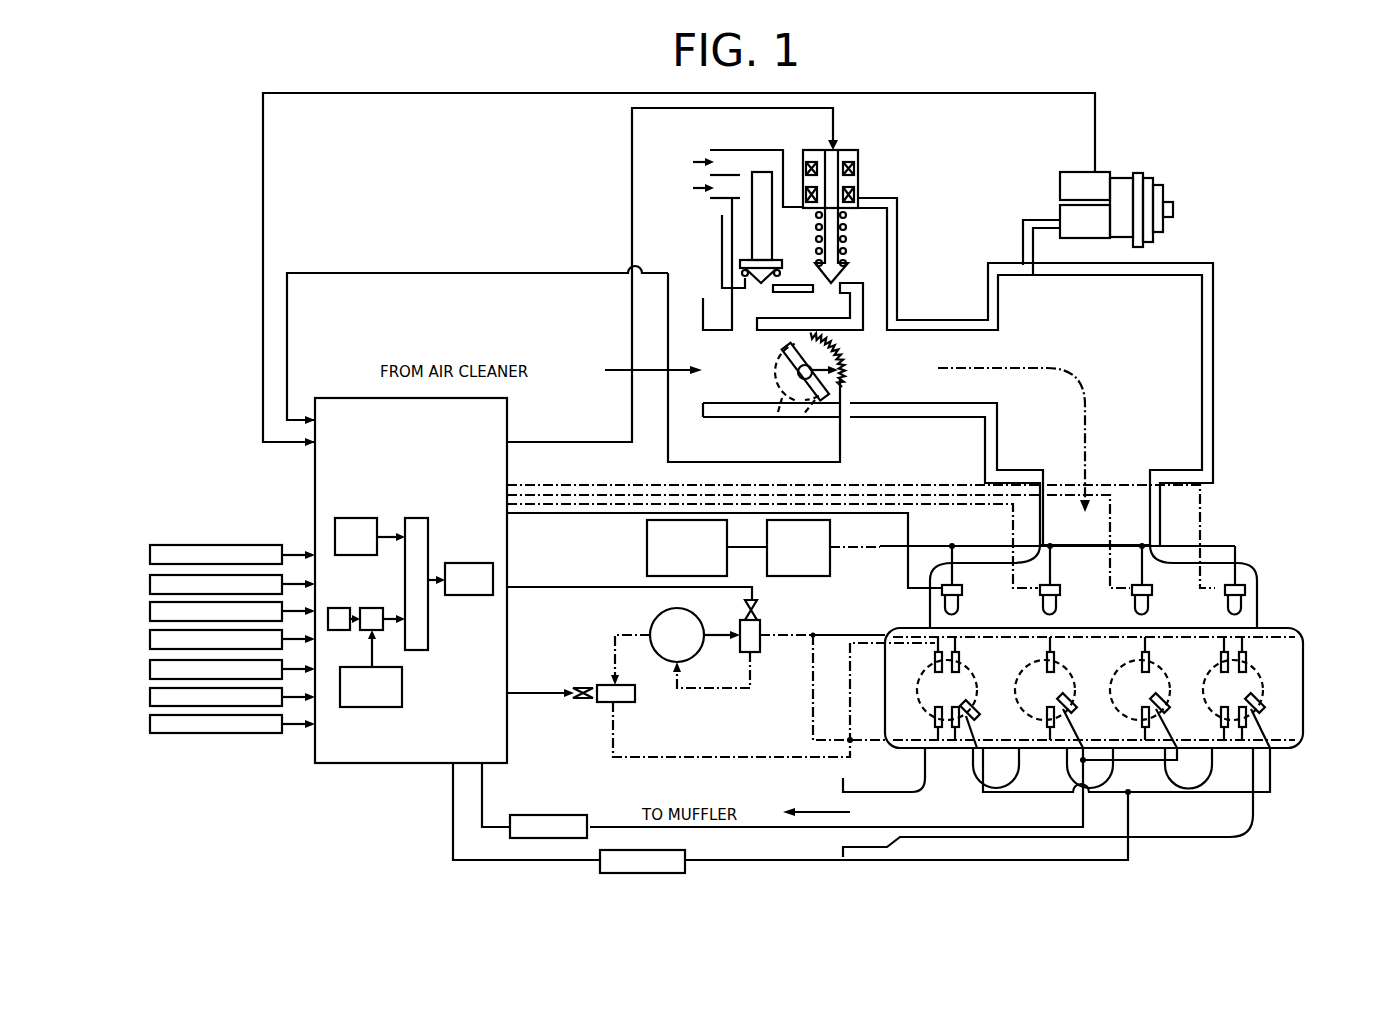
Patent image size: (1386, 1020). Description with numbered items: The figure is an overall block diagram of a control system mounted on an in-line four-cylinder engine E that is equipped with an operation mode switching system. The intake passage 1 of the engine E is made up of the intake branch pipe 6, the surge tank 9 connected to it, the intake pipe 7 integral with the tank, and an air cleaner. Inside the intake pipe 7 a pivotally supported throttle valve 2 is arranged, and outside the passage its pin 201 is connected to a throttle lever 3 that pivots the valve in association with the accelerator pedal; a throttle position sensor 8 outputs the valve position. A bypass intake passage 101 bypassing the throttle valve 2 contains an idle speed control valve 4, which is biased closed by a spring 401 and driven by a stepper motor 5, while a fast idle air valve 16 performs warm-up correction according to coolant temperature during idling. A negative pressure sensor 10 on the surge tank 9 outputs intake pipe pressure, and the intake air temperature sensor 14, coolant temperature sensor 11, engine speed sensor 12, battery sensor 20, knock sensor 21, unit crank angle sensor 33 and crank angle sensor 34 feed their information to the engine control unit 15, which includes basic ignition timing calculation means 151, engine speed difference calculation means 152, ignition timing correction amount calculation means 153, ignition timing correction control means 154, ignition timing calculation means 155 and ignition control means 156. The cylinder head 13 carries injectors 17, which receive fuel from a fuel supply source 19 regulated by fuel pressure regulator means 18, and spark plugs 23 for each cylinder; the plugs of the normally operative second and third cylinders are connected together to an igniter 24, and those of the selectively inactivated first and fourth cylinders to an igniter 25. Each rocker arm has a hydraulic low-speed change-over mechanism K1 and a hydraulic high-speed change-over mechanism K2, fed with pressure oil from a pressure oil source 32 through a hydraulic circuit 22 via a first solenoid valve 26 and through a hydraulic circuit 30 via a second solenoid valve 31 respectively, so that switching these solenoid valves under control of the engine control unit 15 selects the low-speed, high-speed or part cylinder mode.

The intake passage 1 is at (918, 352).
The throttle valve 2 is at (782, 350).
The throttle lever 3 is at (772, 428).
The idle speed control (ISC) valve 4 is at (815, 226).
The stepper motor 5 is at (858, 166).
The intake branch pipe 6 is at (1262, 614).
The intake pipe 7 is at (886, 418).
The throttle position sensor 8 is at (843, 356).
The surge tank 9 is at (1213, 382).
The negative pressure sensor 10 is at (1137, 173).
The coolant temperature sensor 11 is at (150, 584).
The engine speed sensor 12 is at (150, 611).
The cylinder head 13 is at (1305, 670).
The intake air temperature sensor 14 is at (150, 639).
The engine control unit (ECU) 15 is at (400, 765).
The fast idle air valve 16 is at (761, 172).
The injectors 17 is at (945, 610).
The fuel pressure regulator means 18 is at (830, 540).
The fuel supply source 19 is at (647, 548).
The battery sensor 20 is at (150, 669).
The knock sensor 21 is at (150, 555).
The hydraulic circuit 22 is at (740, 757).
The spark plugs 23 is at (975, 706).
The igniter 24 is at (548, 815).
The igniter 25 is at (598, 868).
The first solenoid valve 26 is at (620, 702).
The hydraulic circuit 30 is at (843, 633).
The second solenoid valve 31 is at (760, 648).
The pressure oil source 32 is at (695, 635).
The unit crank angle sensor 33 is at (150, 697).
The crank angle sensor 34 is at (150, 724).
The bypass intake passage 101 is at (878, 248).
The basic ignition timing calculation means 151 is at (352, 523).
The engine speed difference calculation means 152 is at (340, 608).
The ignition timing correction amount calculation means 153 is at (375, 608).
The ignition timing correction control means 154 is at (400, 690).
The ignition timing calculation means 155 is at (418, 528).
The ignition control means 156 is at (470, 565).
The pin 201 is at (800, 373).
The spring 401 is at (848, 236).
The engine E is at (1270, 604).
The hydraulic low-speed change-over mechanism K1 is at (935, 662).
The hydraulic high-speed change-over mechanism K2 is at (959, 662).